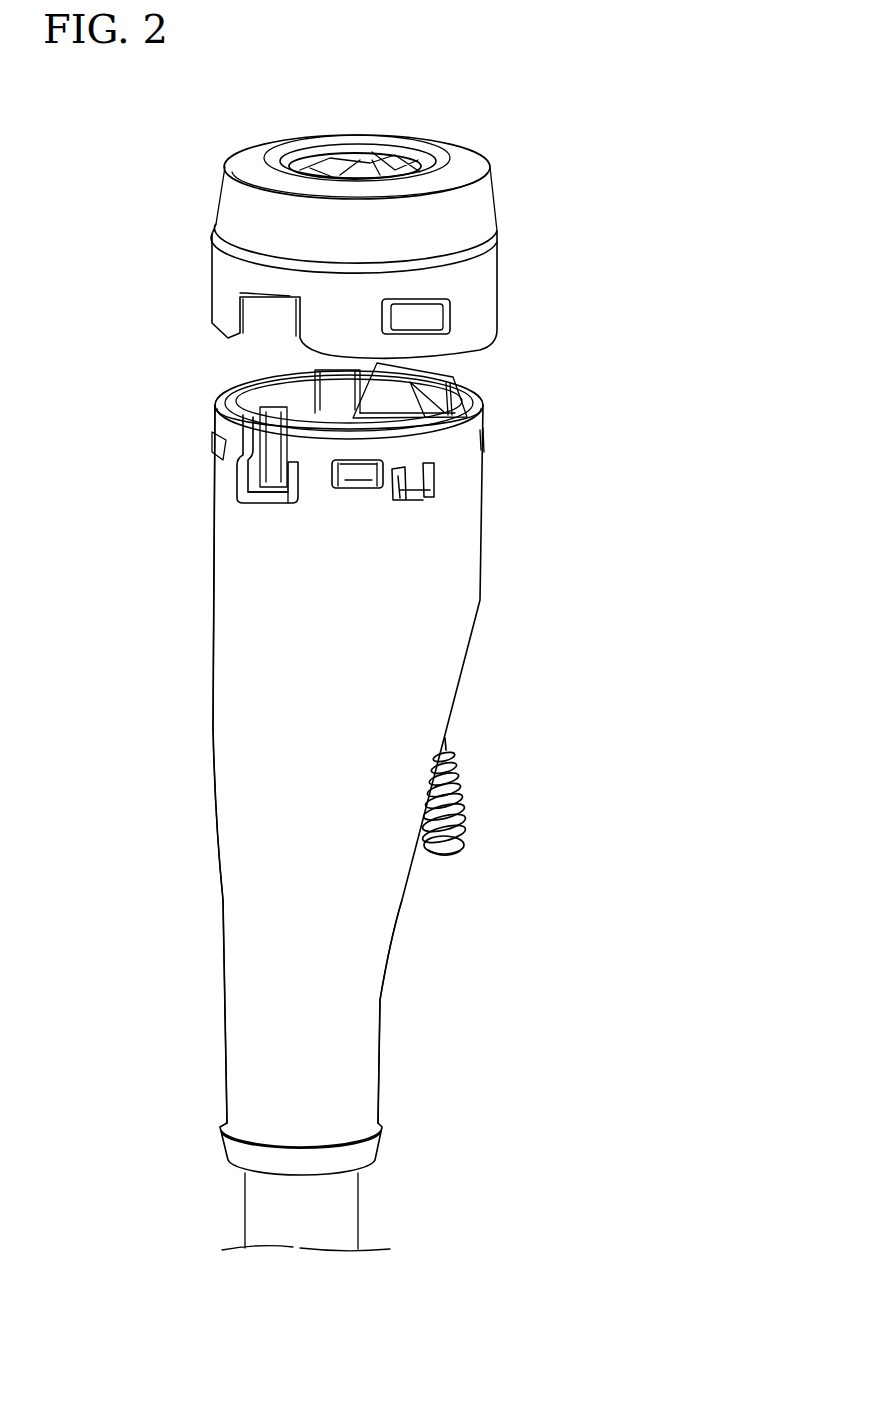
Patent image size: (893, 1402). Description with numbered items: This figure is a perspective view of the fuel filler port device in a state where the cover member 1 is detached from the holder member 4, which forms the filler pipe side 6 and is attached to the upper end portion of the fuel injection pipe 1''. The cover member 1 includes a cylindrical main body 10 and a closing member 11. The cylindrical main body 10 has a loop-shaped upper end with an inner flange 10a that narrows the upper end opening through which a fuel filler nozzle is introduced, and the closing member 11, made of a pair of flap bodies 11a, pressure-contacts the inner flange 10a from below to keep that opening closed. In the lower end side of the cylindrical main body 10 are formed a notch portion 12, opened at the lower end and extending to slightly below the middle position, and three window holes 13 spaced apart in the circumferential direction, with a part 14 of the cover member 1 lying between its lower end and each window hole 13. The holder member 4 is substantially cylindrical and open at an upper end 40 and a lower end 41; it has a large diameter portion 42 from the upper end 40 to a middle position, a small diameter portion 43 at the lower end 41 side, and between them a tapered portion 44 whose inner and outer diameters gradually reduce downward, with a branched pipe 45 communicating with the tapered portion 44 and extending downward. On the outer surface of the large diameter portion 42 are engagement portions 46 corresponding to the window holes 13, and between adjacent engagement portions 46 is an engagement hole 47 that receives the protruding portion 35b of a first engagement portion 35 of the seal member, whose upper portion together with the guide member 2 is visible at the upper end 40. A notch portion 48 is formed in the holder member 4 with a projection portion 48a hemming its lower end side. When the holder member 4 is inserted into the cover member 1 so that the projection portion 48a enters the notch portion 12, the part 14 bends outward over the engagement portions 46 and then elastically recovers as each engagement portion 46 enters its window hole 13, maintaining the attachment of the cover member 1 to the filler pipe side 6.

The cover member 1 is at (319, 244).
The cylindrical main body 10 is at (351, 223).
The inner flange 10a is at (263, 152).
The closing member 11 is at (347, 172).
The flap bodies 11a is at (355, 166).
The notch portion 12 is at (267, 318).
The window holes 13 is at (448, 312).
The part of the cover member 14 is at (427, 343).
The guide member 2 is at (453, 372).
The upper end 40 is at (485, 423).
The large diameter portion 42 is at (227, 555).
The small diameter portion 43 is at (362, 1070).
The tapered portion 44 is at (400, 758).
The branched pipe 45 is at (462, 842).
The engagement portions 46 is at (215, 445).
The engagement hole 47 is at (345, 488).
The notch portion 48 is at (240, 495).
The projection portion 48a is at (277, 503).
The first engagement portion 35 is at (365, 490).
The protruding portion 35b is at (428, 480).
The holder member 4 is at (339, 783).
The filler pipe side 6 is at (220, 764).
The lower end 41 is at (318, 1180).
The fuel injection pipe 1'' is at (254, 1208).